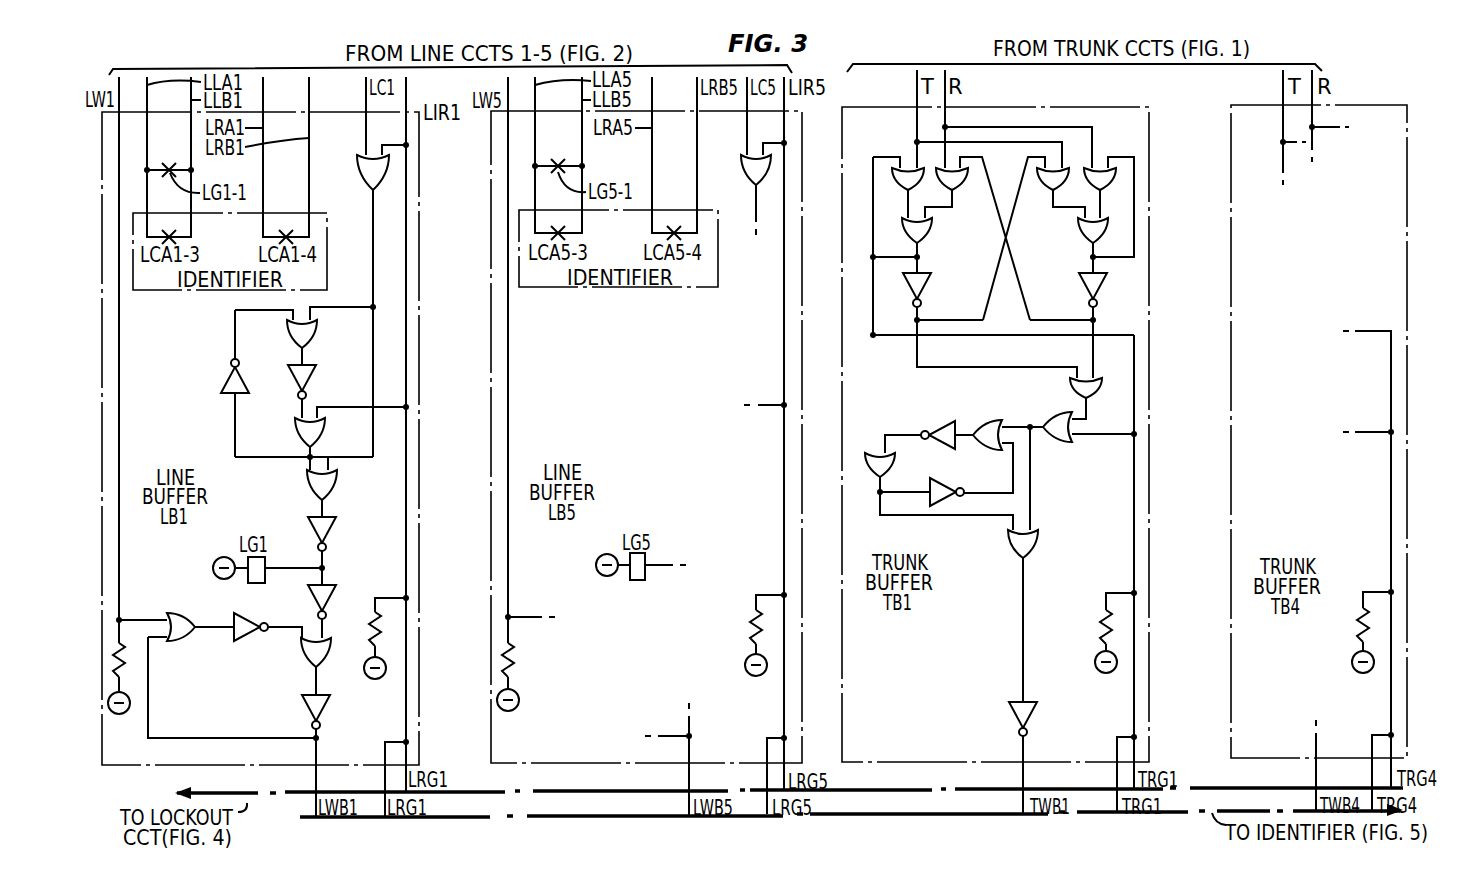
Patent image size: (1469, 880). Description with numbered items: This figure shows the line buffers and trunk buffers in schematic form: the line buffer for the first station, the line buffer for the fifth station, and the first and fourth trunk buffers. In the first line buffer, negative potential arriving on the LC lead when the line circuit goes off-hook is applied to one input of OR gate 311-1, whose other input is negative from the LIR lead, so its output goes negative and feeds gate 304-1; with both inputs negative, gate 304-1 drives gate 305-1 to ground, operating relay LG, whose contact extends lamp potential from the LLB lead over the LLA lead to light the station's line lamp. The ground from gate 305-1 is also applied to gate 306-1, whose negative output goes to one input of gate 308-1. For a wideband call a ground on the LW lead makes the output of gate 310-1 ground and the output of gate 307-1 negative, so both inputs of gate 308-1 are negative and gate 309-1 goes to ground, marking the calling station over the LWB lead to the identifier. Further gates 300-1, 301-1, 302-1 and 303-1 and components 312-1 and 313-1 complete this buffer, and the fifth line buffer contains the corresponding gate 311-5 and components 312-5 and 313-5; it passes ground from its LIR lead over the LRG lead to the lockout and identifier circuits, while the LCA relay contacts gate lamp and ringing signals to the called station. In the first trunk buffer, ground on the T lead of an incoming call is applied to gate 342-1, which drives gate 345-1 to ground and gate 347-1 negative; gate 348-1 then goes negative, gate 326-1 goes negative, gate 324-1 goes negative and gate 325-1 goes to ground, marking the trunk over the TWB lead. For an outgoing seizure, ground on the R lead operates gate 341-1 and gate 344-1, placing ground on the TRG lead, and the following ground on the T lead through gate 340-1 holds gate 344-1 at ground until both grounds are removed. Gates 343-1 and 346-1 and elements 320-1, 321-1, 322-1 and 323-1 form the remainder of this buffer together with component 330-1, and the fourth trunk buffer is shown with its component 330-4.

The inverter 300-1 is at (232, 365).
The OR gate 301-1 is at (312, 332).
The inverter 302-1 is at (312, 376).
The OR gate 303-1 is at (300, 437).
The gate 304-1 is at (336, 482).
The gate 305-1 is at (335, 525).
The gate 306-1 is at (310, 593).
The gate 307-1 is at (248, 642).
The gate 308-1 is at (302, 647).
The gate 309-1 is at (299, 705).
The gate 310-1 is at (181, 614).
The OR gate 311-1 is at (358, 172).
The resistor 312-1 is at (370, 620).
The resistor 313-1 is at (135, 658).
The OR gate 311-5 is at (747, 163).
The resistor 312-5 is at (748, 622).
The resistor 313-5 is at (518, 652).
The inverter 320-1 is at (953, 497).
The OR gate 321-1 is at (990, 402).
The inverter 322-1 is at (945, 423).
The OR gate 323-1 is at (893, 462).
The gate 324-1 is at (1032, 540).
The gate 325-1 is at (1012, 712).
The gate 326-1 is at (1062, 438).
The resistor 330-1 is at (1100, 628).
The resistor 330-4 is at (1355, 628).
The gate 340-1 is at (910, 165).
The gate 341-1 is at (957, 188).
The gate 342-1 is at (1050, 188).
The OR gate 343-1 is at (1098, 168).
The gate 344-1 is at (930, 235).
The gate 345-1 is at (1087, 240).
The inverter 346-1 is at (927, 283).
The gate 347-1 is at (1080, 283).
The gate 348-1 is at (1070, 384).